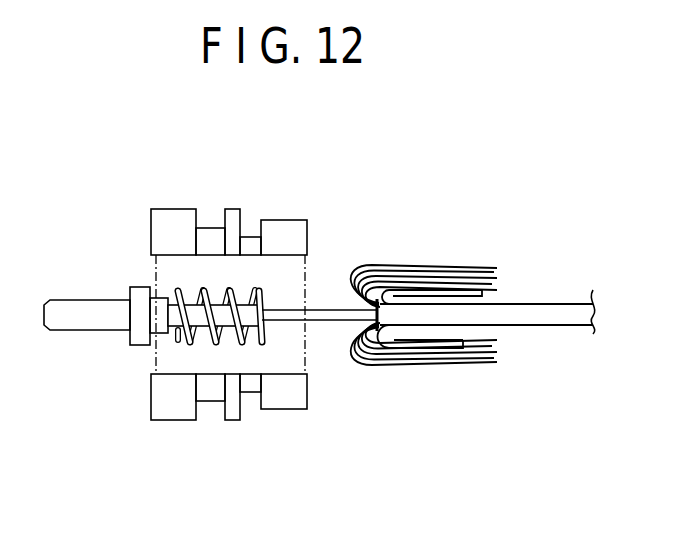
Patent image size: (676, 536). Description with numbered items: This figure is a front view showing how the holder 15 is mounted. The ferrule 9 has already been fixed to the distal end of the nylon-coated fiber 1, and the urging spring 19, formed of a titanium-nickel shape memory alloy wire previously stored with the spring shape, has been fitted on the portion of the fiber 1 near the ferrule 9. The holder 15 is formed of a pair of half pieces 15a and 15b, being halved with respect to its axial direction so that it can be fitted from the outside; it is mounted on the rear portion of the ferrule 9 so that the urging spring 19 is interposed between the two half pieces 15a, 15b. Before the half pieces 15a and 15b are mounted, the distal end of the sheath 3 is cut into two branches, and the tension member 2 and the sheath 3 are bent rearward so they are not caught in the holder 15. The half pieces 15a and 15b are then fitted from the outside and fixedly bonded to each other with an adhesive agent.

The nylon-coated fiber 1 is at (328, 318).
The tension member 2 is at (398, 267).
The sheath 3 is at (461, 292).
The ferrule 9 is at (81, 323).
The holder 15 is at (229, 313).
The half piece 15a is at (178, 210).
The half piece 15b is at (182, 412).
The urging spring 19 is at (176, 294).